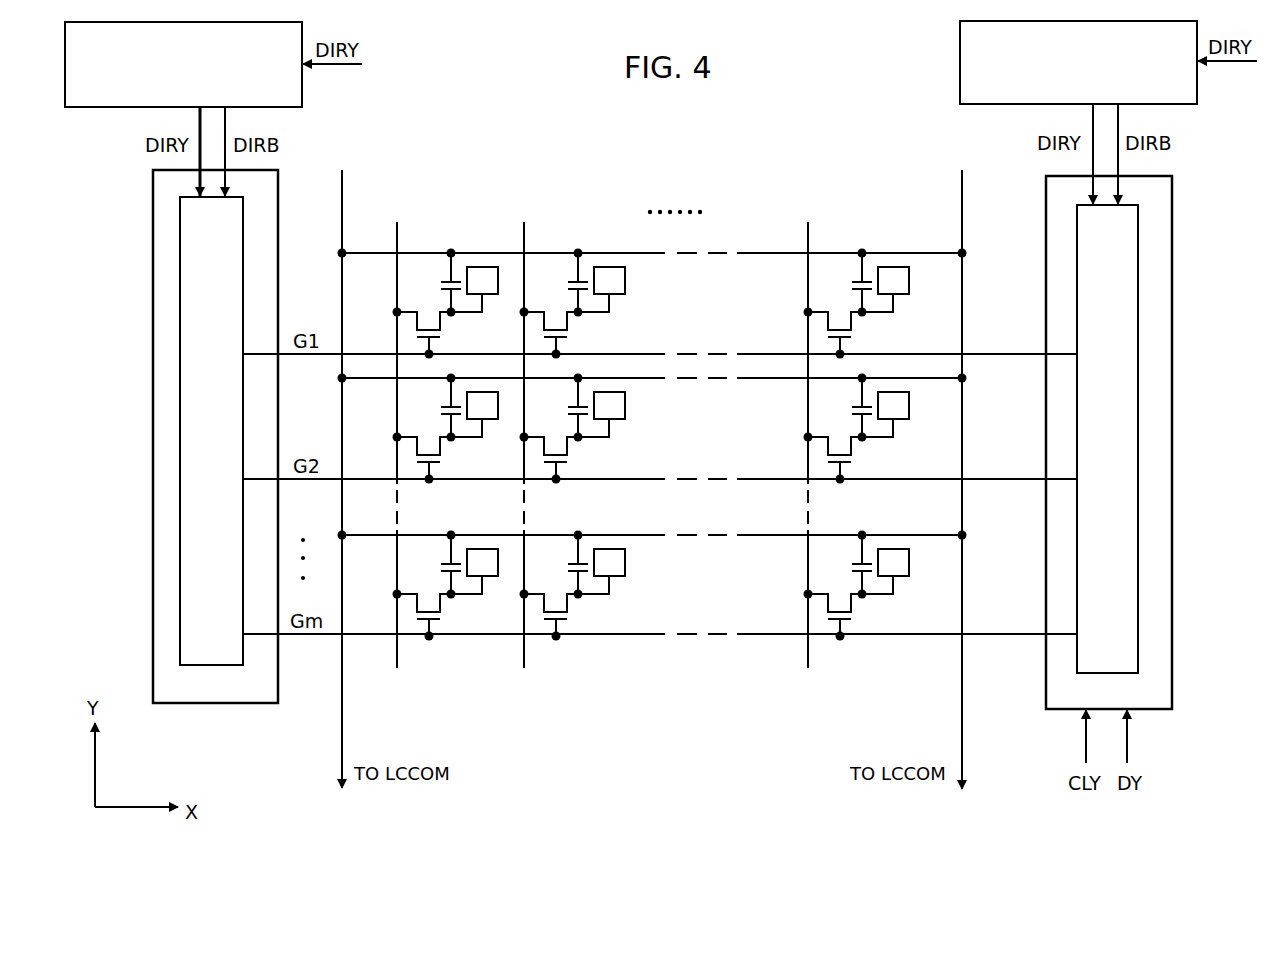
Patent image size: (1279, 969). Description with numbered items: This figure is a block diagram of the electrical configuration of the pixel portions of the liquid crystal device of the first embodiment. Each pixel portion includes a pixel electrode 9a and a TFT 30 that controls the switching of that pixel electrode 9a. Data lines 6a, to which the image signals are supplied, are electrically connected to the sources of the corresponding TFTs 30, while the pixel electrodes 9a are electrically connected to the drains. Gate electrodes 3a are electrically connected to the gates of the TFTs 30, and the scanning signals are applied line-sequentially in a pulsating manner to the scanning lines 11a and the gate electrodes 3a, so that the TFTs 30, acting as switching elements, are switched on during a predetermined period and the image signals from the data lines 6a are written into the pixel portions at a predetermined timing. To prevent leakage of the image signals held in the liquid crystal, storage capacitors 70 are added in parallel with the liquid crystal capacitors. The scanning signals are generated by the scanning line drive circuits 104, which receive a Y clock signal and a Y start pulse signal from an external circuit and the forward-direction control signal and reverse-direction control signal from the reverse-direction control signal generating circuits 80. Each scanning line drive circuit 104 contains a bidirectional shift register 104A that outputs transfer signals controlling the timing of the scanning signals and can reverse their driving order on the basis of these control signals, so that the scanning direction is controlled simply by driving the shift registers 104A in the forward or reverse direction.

The reverse-direction control signal generating circuit 80 is at (304, 90).
The scanning line drive circuit 104 is at (153, 207).
The bidirectional shift register 104A is at (180, 300).
The data line 6a is at (399, 232).
The scanning line 11a is at (308, 362).
The storage capacitor 70 is at (438, 288).
The TFT 30 is at (418, 325).
The pixel electrode 9a is at (903, 294).
The gate electrode 3a is at (842, 638).